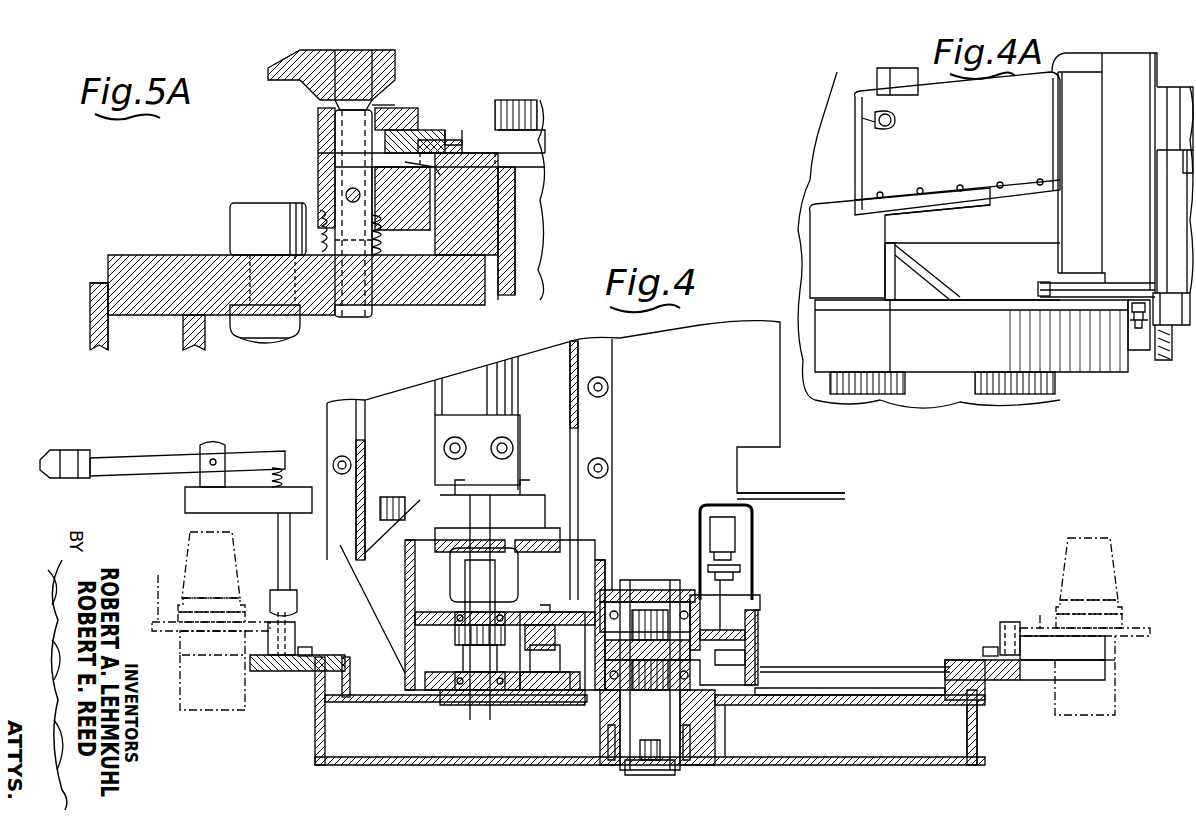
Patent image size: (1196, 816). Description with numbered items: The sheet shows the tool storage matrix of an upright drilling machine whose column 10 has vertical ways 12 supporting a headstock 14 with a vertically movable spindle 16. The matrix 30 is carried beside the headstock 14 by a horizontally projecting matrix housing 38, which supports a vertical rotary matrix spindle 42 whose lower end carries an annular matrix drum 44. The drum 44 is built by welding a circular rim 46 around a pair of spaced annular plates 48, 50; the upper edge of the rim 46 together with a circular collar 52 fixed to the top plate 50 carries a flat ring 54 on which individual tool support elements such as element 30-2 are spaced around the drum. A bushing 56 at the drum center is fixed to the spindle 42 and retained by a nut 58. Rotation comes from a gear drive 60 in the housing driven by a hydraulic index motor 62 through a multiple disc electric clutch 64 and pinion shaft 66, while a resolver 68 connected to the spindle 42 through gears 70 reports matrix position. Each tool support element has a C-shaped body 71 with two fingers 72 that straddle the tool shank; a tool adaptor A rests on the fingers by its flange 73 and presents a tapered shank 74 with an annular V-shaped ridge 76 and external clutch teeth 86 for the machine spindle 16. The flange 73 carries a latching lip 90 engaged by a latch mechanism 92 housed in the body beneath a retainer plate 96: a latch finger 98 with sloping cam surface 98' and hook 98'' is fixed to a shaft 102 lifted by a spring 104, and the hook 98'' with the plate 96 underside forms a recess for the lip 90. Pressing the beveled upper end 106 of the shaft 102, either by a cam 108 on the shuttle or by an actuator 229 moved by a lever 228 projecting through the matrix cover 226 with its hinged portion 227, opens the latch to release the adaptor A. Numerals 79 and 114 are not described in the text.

In FIG. 4A, the upright column 10 is at (825, 130).
In FIG. 4A, the vertical ways 12 is at (890, 392).
In FIG. 4A, the headstock 14 is at (1137, 217).
In FIG. 4A, the spindle 16 is at (1165, 345).
In FIG. 4A, the matrix 30 is at (1092, 385).
In FIG. 4, the matrix 30 is at (990, 740).
In FIG. 4, the tool support element 30-2 is at (1090, 665).
In FIG. 4A, the matrix housing 38 is at (852, 249).
In FIG. 4, the matrix housing 38 is at (355, 573).
In FIG. 4, the matrix spindle 42 is at (640, 740).
In FIG. 4, the matrix drum 44 is at (540, 766).
In FIG. 5A, the circular rim 46 is at (183, 345).
In FIG. 4, the circular rim 46 is at (315, 735).
In FIG. 4, the annular plate 48 is at (750, 766).
In FIG. 4, the top annular plate 50 is at (940, 705).
In FIG. 5A, the circular collar 52 is at (90, 345).
In FIG. 4, the circular collar 52 is at (945, 662).
In FIG. 5A, the flat ring 54 is at (482, 300).
In FIG. 4, the flat ring 54 is at (310, 675).
In FIG. 4, the bushing 56 is at (708, 722).
In FIG. 4, the nut 58 is at (668, 770).
In FIG. 4, the gear drive 60 is at (505, 650).
In FIG. 4, the hydraulic index motor 62 is at (520, 462).
In FIG. 4, the multiple disc electric clutch 64 is at (520, 585).
In FIG. 4, the pinion shaft 66 is at (455, 652).
In FIG. 4, the resolver 68 is at (740, 532).
In FIG. 4, the gears 70 is at (758, 645).
In FIG. 4, the C-shaped body 71 is at (295, 625).
In FIG. 4, the fingers 72 is at (205, 650).
In FIG. 5A, the flange 73 is at (470, 153).
In FIG. 4, the flange 73 is at (160, 622).
In FIG. 4, the tapered shank 74 is at (1110, 565).
In FIG. 4, the annular V-shaped ridge 76 is at (245, 605).
In FIG. 4, the tool holder 79 is at (190, 565).
In FIG. 5A, the multiple tooth external clutch 86 is at (500, 100).
In FIG. 5A, the latching lip 90 is at (425, 132).
In FIG. 5A, the latch mechanism 92 is at (318, 128).
In FIG. 5A, the retainer plate 96 is at (408, 108).
In FIG. 5A, the latch finger 98 is at (374, 232).
In FIG. 5A, the sloping cam surface 98' is at (441, 130).
In FIG. 5A, the hook 98'' is at (460, 204).
In FIG. 5A, the latch shaft 102 is at (345, 318).
In FIG. 5A, the spring 104 is at (395, 255).
In FIG. 5A, the upper end of latch shaft 106 is at (340, 108).
In FIG. 5A, the cam 108 is at (300, 90).
In FIG. 5A, the stop 114 is at (230, 210).
In FIG. 4, the stop 114 is at (312, 648).
In FIG. 4A, the matrix cover 226 is at (1075, 372).
In FIG. 4A, the hinged portion 227 is at (885, 255).
In FIG. 4A, the lever 228 is at (1040, 282).
In FIG. 4, the lever 228 is at (160, 440).
In FIG. 4, the actuator 229 is at (278, 545).
In FIG. 5A, the tool adaptor A is at (530, 95).